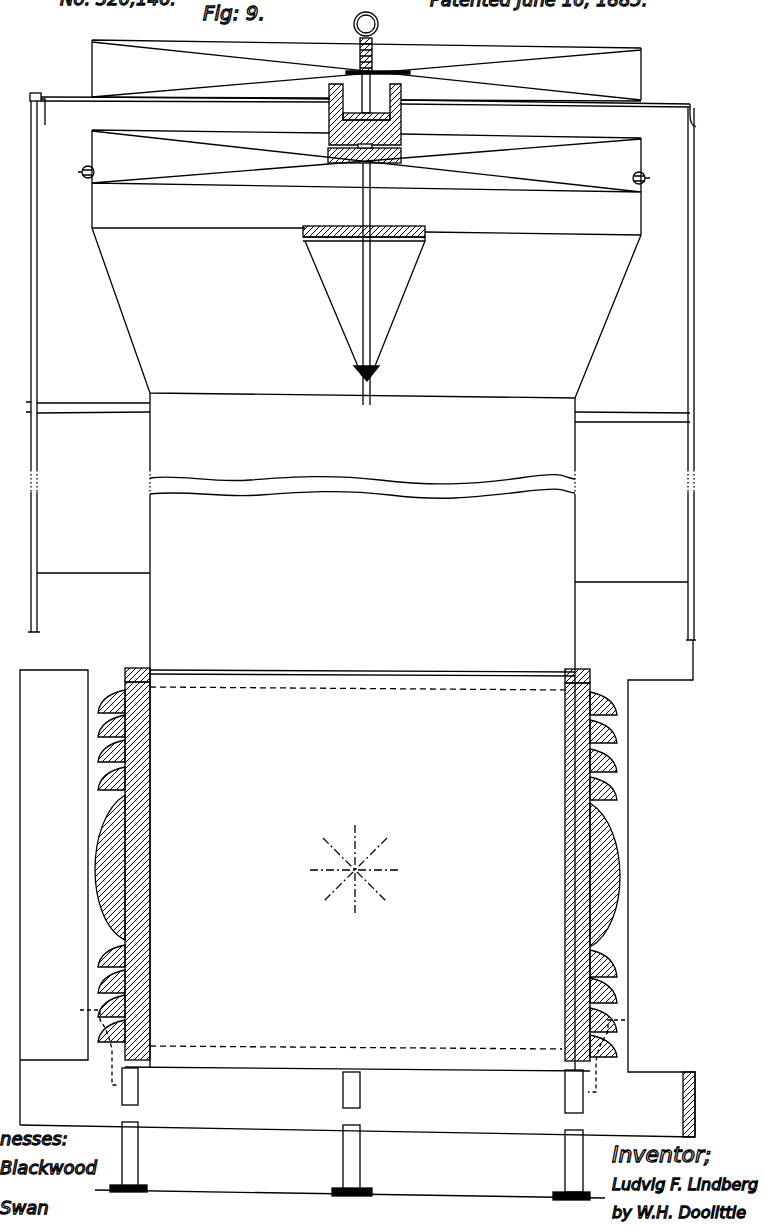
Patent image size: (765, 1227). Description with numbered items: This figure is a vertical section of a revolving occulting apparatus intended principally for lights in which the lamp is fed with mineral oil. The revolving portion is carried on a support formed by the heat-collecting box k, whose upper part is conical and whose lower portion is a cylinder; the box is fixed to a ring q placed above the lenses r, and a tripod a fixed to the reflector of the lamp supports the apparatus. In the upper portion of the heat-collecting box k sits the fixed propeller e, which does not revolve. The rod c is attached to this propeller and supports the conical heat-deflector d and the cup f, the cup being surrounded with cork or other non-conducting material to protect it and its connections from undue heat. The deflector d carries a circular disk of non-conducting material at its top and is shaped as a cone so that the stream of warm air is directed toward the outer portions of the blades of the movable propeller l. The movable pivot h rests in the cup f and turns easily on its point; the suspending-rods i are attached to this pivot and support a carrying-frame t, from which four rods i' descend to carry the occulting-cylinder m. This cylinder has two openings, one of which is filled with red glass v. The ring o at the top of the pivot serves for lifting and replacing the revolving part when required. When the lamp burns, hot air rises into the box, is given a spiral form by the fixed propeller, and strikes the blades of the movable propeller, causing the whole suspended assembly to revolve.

The ring o is at (379, 28).
The movable propeller l is at (366, 70).
The suspending-rods i is at (368, 96).
The rods i' is at (361, 370).
The carrying-frame t is at (46, 101).
The movable pivot h is at (364, 118).
The cup f is at (371, 93).
The valve seat s is at (366, 109).
The fixed propeller e is at (364, 182).
The rod c is at (366, 211).
The conical heat-deflector d is at (398, 300).
The heat-collecting box k is at (366, 649).
The tripod a is at (363, 409).
The occulting-cylinder m is at (362, 605).
The ring q is at (351, 677).
The lenses r is at (357, 871).
The red glass v is at (22, 800).